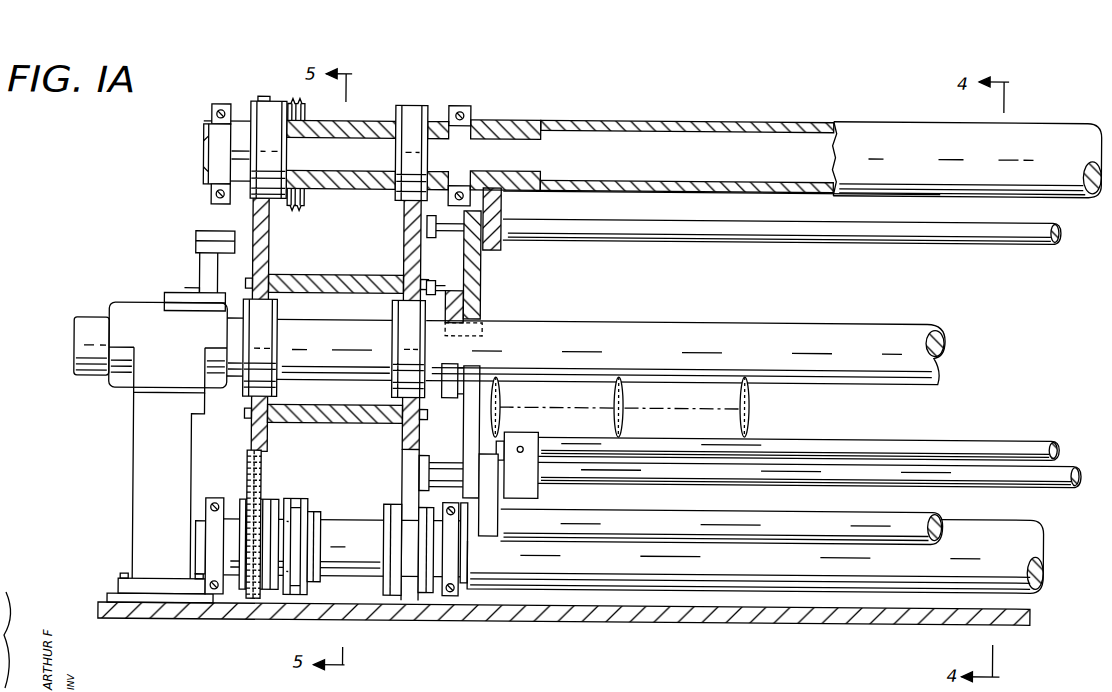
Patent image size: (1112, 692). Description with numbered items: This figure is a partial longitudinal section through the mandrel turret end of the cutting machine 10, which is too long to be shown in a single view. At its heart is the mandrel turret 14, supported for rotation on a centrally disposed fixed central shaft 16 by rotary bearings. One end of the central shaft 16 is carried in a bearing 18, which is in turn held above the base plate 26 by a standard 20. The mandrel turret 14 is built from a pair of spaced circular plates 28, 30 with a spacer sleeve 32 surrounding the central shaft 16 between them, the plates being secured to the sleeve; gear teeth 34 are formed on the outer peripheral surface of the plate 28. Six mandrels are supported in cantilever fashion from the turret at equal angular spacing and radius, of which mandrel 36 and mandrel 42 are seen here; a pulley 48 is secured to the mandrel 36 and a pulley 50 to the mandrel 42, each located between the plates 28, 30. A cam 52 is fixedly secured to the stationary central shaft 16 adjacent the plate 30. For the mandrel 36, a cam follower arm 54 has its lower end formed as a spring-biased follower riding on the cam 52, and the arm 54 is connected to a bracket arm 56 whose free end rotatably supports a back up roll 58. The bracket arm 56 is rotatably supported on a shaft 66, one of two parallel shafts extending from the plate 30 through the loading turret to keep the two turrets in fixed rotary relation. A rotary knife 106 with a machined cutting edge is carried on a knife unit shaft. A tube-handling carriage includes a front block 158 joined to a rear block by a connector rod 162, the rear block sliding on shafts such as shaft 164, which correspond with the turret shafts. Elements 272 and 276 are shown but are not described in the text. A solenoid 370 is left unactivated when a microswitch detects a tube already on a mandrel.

The cutting machine 10 is at (704, 640).
The mandrel turret 14 is at (226, 205).
The central shaft 16 is at (712, 318).
The bearing 18 is at (122, 302).
The standard 20 is at (132, 468).
The base plate 26 is at (843, 618).
The circular plate 28 is at (267, 214).
The circular plate 30 is at (402, 228).
The spacer sleeve 32 is at (312, 275).
The gear teeth 34 is at (257, 96).
The mandrel 36 is at (1062, 122).
The mandrel 42 is at (986, 512).
The pulley 48 is at (302, 189).
The pulley 50 is at (306, 500).
The cam 52 is at (462, 298).
The cam follower arm 54 is at (478, 270).
The bracket arm 56 is at (498, 205).
The back up roll 58 is at (893, 196).
The shaft 66 is at (945, 240).
The rotary knife 106 is at (499, 381).
The front block 158 is at (537, 491).
The connector rod 162 is at (1018, 434).
The shaft 164 is at (946, 486).
The bracket 272 is at (487, 533).
The inner rod 276 is at (804, 505).
The solenoid 370 is at (193, 239).